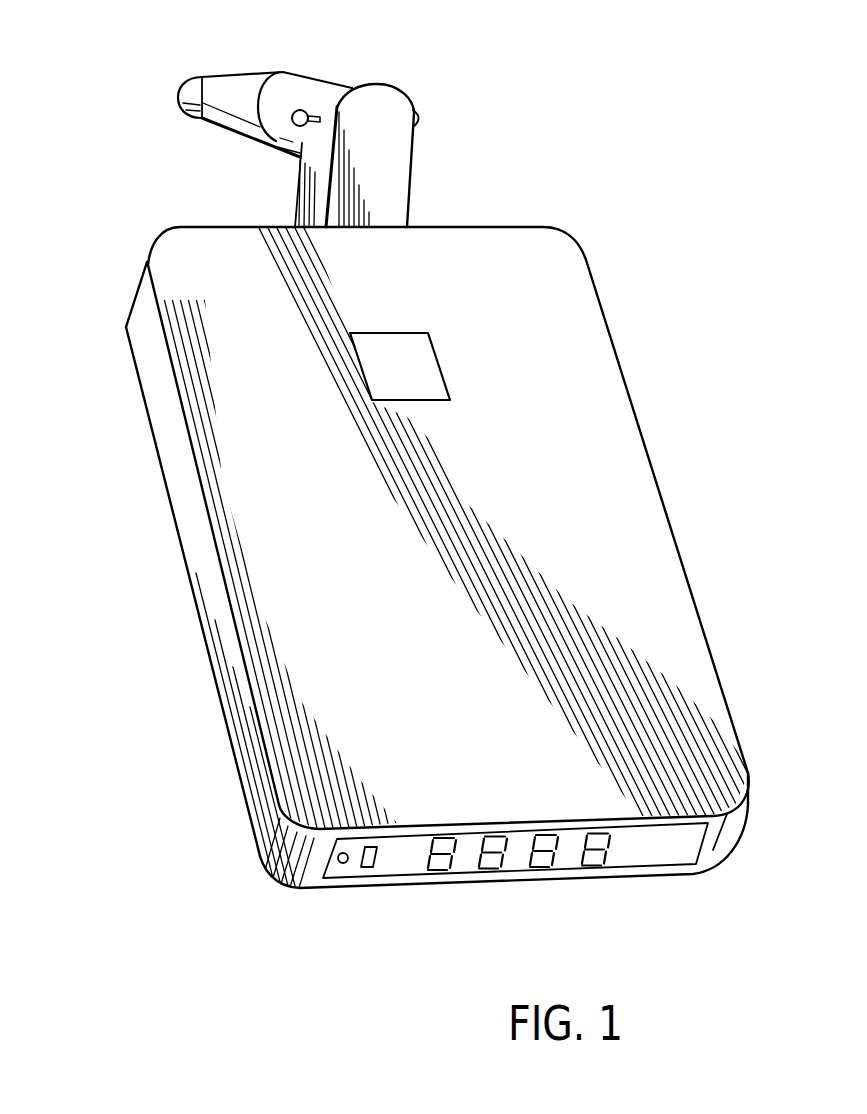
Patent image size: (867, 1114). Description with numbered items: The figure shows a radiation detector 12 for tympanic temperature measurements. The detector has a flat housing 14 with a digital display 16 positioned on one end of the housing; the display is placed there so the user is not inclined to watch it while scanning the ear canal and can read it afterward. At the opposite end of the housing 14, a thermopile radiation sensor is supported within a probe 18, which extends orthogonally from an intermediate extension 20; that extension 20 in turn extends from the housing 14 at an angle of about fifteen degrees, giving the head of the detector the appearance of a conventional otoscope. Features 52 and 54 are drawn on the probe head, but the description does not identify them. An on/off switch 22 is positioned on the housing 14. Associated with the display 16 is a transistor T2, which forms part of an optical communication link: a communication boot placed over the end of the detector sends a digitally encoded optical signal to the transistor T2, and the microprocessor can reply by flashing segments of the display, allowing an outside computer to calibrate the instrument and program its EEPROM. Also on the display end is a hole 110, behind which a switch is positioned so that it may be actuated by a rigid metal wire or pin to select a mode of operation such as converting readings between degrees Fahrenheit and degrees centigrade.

The radiation detector 12 is at (165, 737).
The flat housing 14 is at (252, 803).
The digital display 16 is at (558, 872).
The probe 18 is at (350, 82).
The intermediate extension 20 is at (403, 205).
The on/off switch 22 is at (427, 380).
The probe button 52 is at (301, 109).
The bump / detent 54 is at (421, 118).
The hole 110 is at (343, 867).
The transistor T2 is at (370, 870).